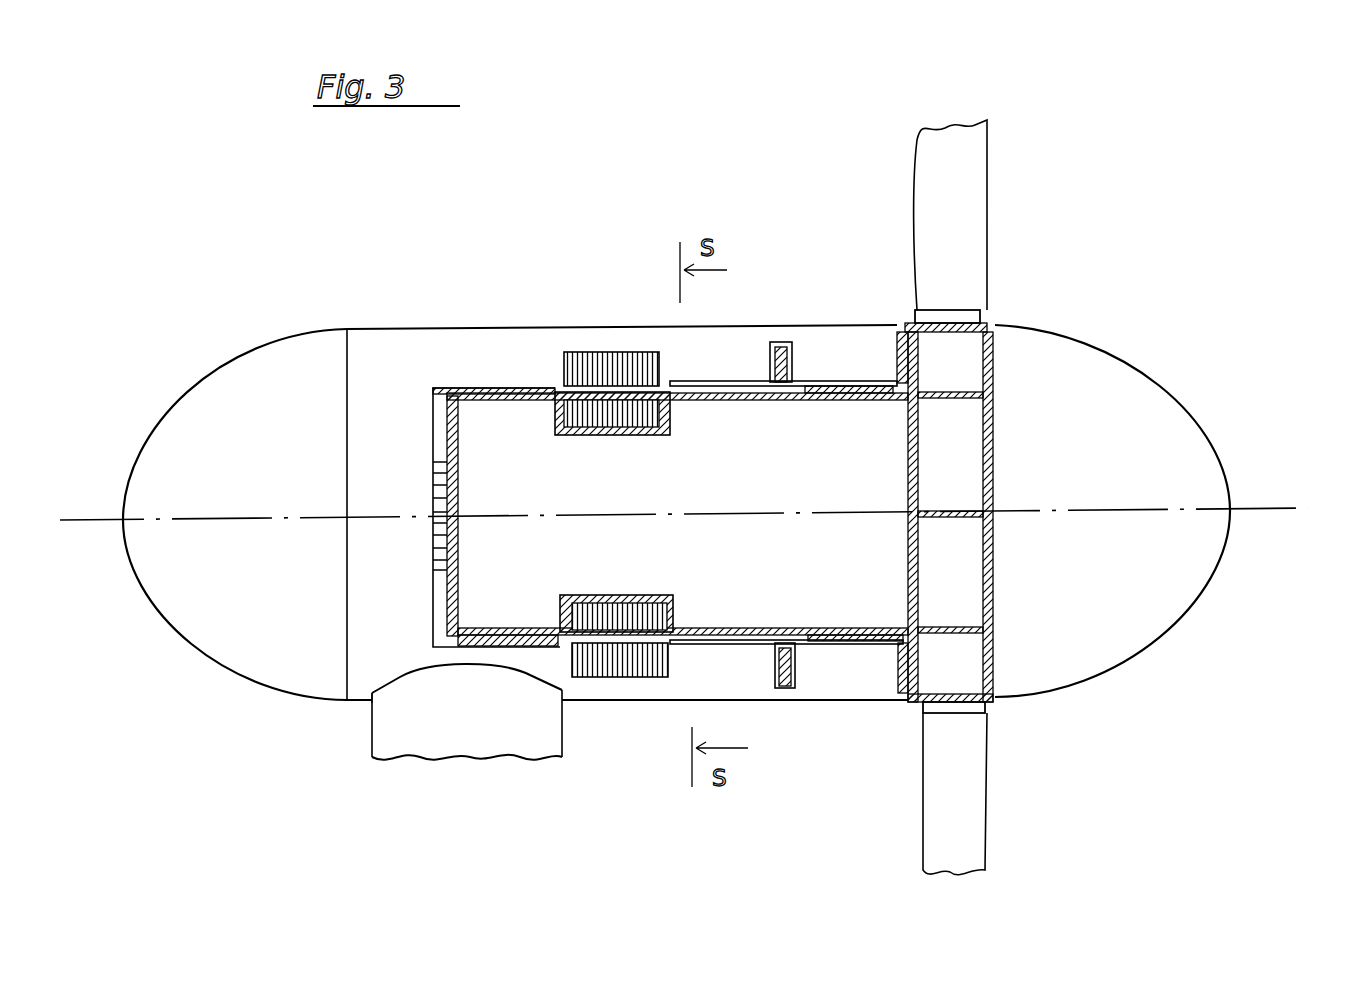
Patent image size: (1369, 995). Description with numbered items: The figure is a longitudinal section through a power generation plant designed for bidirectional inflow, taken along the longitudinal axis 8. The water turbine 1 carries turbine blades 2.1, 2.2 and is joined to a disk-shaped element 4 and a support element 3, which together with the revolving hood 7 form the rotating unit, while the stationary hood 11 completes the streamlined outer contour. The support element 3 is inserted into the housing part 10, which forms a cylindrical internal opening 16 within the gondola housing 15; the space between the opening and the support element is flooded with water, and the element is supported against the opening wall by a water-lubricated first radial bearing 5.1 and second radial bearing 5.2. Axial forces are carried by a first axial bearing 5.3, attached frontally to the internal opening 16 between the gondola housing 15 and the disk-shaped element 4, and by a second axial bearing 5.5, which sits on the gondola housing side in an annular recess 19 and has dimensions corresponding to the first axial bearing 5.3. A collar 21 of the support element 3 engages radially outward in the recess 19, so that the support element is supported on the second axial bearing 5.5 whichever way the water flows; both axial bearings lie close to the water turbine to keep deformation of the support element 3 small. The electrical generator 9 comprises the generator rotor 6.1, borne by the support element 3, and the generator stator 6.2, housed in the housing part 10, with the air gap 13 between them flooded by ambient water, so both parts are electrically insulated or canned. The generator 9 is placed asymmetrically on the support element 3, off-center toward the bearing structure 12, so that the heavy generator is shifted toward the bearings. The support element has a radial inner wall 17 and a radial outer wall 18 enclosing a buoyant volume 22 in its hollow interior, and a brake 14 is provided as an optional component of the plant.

The water turbine 1 is at (955, 98).
The turbine blade 2.1 is at (968, 198).
The turbine blade 2.2 is at (977, 777).
The support element 3 is at (772, 342).
The disk-shaped element 4 is at (995, 325).
The first radial bearing 5.1 is at (487, 389).
The second radial bearing 5.2 is at (897, 370).
The first axial bearing 5.3 is at (897, 695).
The second axial bearing 5.5 is at (793, 690).
The generator rotor 6.1 is at (553, 392).
The generator stator 6.2 is at (565, 355).
The revolving hood 7 is at (1158, 405).
The longitudinal axis 8 is at (1308, 508).
The electrical generator 9 is at (568, 352).
The housing part forming an internal opening 10 is at (672, 685).
The stationary hood 11 is at (245, 645).
The bearing structure 12 is at (507, 710).
The air gap 13 is at (680, 383).
The brake 14 is at (437, 555).
The gondola housing 15 is at (385, 648).
The internal opening 16 is at (748, 460).
The radial inner wall 17 is at (760, 633).
The radial outer wall 18 is at (720, 630).
The annular recess 19 is at (792, 345).
The collar 21 is at (770, 690).
The buoyant volume 22 is at (636, 490).